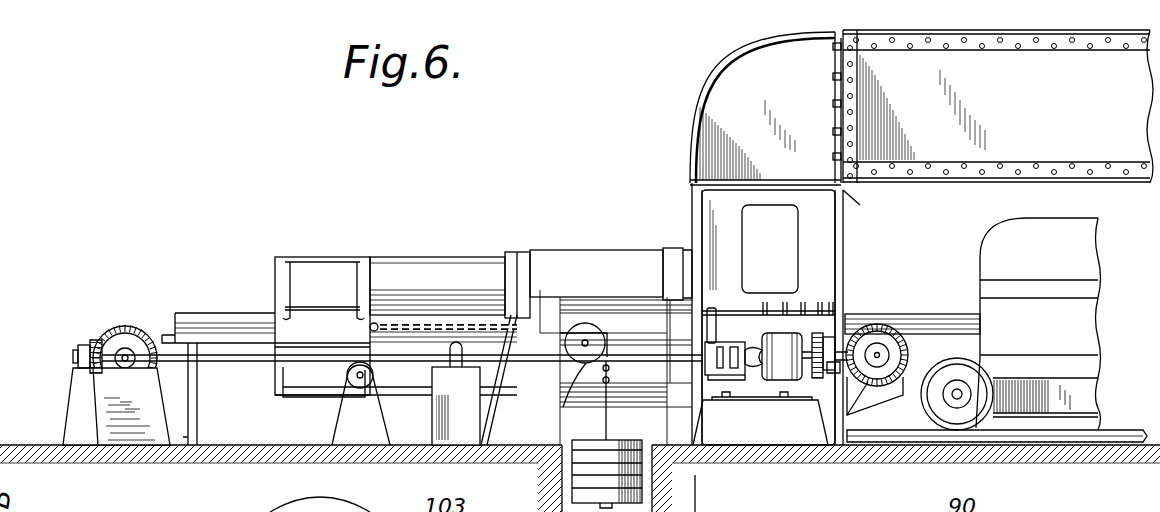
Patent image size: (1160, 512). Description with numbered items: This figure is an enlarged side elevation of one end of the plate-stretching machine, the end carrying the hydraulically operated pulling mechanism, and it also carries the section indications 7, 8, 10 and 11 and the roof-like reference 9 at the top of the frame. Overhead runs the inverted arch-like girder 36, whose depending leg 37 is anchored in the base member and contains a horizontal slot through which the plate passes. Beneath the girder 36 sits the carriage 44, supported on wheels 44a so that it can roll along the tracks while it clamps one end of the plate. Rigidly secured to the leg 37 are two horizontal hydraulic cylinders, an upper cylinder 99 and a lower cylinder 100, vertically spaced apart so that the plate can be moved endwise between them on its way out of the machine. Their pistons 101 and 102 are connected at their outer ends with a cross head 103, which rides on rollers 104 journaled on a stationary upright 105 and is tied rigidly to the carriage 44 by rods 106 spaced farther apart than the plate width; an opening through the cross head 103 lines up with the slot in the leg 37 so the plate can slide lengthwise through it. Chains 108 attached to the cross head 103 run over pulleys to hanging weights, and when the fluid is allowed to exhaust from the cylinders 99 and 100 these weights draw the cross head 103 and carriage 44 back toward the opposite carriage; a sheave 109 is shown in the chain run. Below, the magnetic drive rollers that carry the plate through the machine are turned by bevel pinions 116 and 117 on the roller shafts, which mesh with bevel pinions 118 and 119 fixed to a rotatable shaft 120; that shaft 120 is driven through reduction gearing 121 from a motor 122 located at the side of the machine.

The section line 7- 7 is at (238, 493).
The section line 8- 8 is at (645, 462).
The cab roof 9 is at (752, 63).
The section line 10- 10 is at (692, 180).
The section line 11- 11 is at (936, 206).
The inverted arch-like girder 36 is at (998, 106).
The depending leg 37 is at (815, 255).
The carriage 44 is at (1080, 331).
The wheels 44a is at (975, 375).
The upper hydraulic cylinder 99 is at (580, 265).
The lower hydraulic cylinder 100 is at (630, 396).
The piston 101 is at (477, 268).
The piston 102 is at (423, 382).
The cross head 103 is at (335, 263).
The rollers 104 is at (357, 368).
The stationary upright 105 is at (361, 405).
The rods 106 is at (192, 327).
The chains 108 is at (407, 323).
The sheave 109 is at (582, 393).
The bevel pinion 116 is at (858, 390).
The bevel pinion 117 is at (127, 323).
The bevel pinion 118 is at (98, 342).
The bevel pinion 119 is at (860, 326).
The rotatable shaft 120 is at (220, 363).
The reduction gearing 121 is at (818, 397).
The motor 122 is at (785, 370).